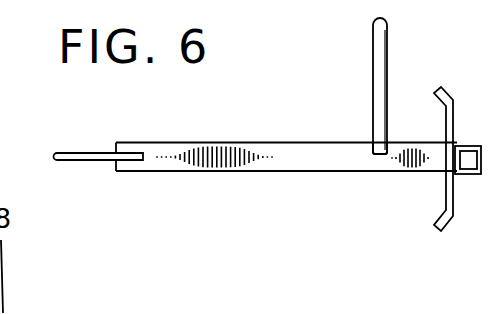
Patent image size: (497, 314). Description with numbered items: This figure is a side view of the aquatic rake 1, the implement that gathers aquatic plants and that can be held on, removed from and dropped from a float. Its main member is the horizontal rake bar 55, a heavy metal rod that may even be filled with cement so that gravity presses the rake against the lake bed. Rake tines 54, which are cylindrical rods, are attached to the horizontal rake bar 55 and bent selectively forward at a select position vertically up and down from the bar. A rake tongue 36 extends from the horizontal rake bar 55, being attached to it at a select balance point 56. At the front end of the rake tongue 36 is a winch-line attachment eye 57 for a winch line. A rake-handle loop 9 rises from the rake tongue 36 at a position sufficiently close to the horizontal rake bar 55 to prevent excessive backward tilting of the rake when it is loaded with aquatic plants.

The aquatic rake 1 is at (317, 78).
The rake-handle loop 9 is at (387, 70).
The rake tongue 36 is at (317, 158).
The rake tines 54 is at (451, 95).
The horizontal rake bar 55 is at (471, 174).
The select balance point 56 is at (378, 152).
The winch-line attachment eye 57 is at (58, 152).